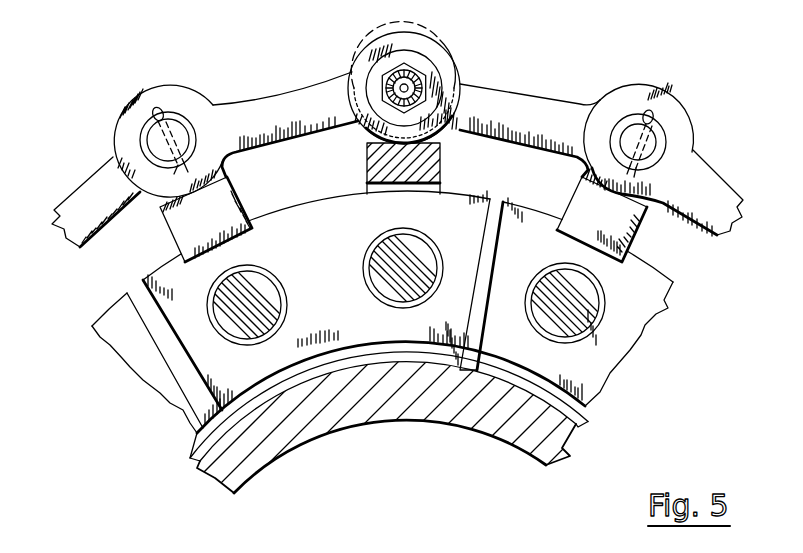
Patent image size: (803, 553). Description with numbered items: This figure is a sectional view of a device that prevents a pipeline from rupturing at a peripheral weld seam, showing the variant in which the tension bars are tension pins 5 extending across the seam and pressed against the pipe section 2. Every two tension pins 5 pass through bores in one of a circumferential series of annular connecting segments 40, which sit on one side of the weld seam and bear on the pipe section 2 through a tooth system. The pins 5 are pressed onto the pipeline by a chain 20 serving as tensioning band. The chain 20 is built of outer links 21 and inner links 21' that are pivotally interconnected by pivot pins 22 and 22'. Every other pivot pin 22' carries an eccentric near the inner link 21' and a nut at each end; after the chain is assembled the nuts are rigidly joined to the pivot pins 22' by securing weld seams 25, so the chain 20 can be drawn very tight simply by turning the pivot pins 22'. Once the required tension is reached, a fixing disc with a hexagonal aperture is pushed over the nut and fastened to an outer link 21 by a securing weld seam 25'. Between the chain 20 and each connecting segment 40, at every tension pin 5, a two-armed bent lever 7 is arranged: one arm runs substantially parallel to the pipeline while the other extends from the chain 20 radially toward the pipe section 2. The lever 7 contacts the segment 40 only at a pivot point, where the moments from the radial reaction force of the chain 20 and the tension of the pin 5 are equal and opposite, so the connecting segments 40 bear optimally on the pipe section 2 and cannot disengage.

The pipe section 2 is at (440, 405).
The tension pin 5 is at (387, 278).
The two-armed bent lever 7 is at (223, 207).
The chain 20 is at (673, 88).
The outer link 21 is at (285, 117).
The inner link 21' is at (390, 151).
The pivot pin 22 is at (173, 126).
The pivot pin 22' is at (450, 74).
The securing weld seam 25 is at (404, 72).
The securing weld seam 25' is at (404, 69).
The annular connecting segment 40 is at (118, 340).